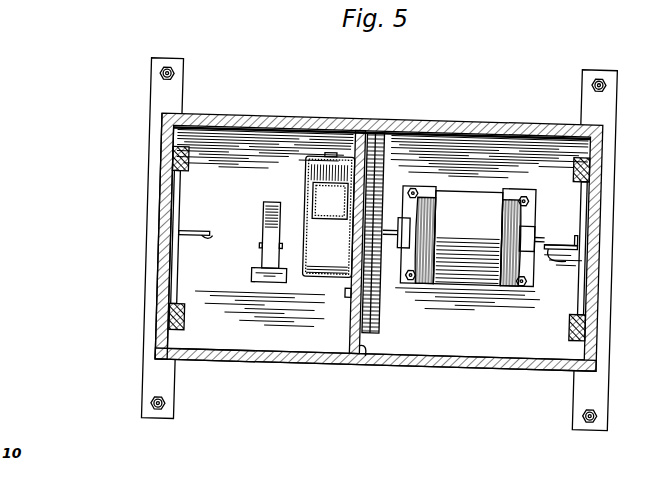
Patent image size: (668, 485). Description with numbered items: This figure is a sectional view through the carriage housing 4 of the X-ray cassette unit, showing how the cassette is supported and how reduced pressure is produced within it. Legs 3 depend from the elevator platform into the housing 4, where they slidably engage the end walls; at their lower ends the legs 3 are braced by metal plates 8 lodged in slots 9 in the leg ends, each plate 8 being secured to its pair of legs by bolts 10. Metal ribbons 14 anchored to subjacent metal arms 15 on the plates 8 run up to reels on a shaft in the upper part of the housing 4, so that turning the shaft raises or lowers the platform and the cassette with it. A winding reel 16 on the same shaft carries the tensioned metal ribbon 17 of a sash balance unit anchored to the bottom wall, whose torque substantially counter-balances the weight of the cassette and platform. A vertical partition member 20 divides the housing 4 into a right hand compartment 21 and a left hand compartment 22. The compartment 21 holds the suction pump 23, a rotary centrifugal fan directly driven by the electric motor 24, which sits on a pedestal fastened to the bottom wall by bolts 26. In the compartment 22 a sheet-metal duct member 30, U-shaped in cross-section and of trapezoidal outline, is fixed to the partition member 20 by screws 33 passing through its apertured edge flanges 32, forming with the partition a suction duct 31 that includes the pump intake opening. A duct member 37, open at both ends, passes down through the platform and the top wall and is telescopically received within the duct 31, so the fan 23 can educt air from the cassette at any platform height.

The legs 3 is at (174, 156).
The housing 4 is at (284, 360).
The plates 8 is at (183, 263).
The slots 9 is at (162, 345).
The bolts 10 is at (190, 311).
The metal ribbons 14 is at (207, 235).
The metal arms 15 is at (190, 231).
The winding reel 16 is at (266, 203).
The tensioned metal ribbon 17 is at (272, 278).
The vertical partition member 20 is at (368, 360).
The right hand compartment 21 is at (391, 234).
The left hand compartment 22 is at (265, 149).
The suction pump 23 is at (408, 126).
The electric motor 24 is at (463, 235).
The bolts 26 is at (526, 186).
The duct member 30 is at (307, 169).
The suction duct 31 is at (331, 150).
The edge flanges 32 is at (357, 295).
The screws 33 is at (350, 287).
The duct member 37 is at (330, 214).